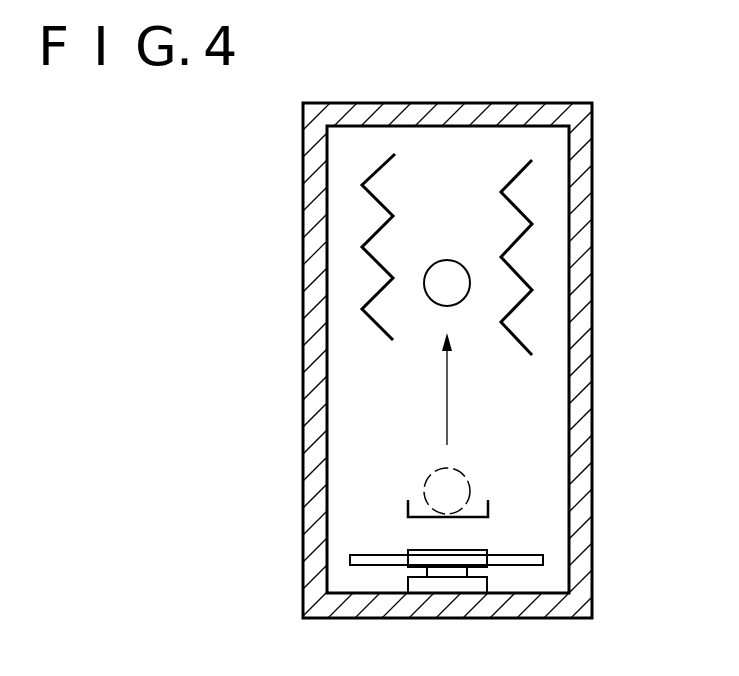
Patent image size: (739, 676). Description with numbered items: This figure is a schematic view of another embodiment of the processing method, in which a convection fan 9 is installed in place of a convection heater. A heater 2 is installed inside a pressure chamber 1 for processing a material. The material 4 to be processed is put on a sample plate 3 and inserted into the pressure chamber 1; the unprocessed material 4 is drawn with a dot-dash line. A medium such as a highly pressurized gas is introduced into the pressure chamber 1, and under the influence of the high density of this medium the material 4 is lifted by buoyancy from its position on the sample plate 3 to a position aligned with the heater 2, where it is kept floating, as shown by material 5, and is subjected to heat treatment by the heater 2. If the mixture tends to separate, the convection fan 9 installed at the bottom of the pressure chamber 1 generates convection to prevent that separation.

The pressure chamber 1 is at (308, 192).
The heater 2 is at (362, 307).
The sample plate 3 is at (408, 510).
The material 4 is at (453, 487).
The material 5 is at (452, 298).
The convection fan 9 is at (518, 555).